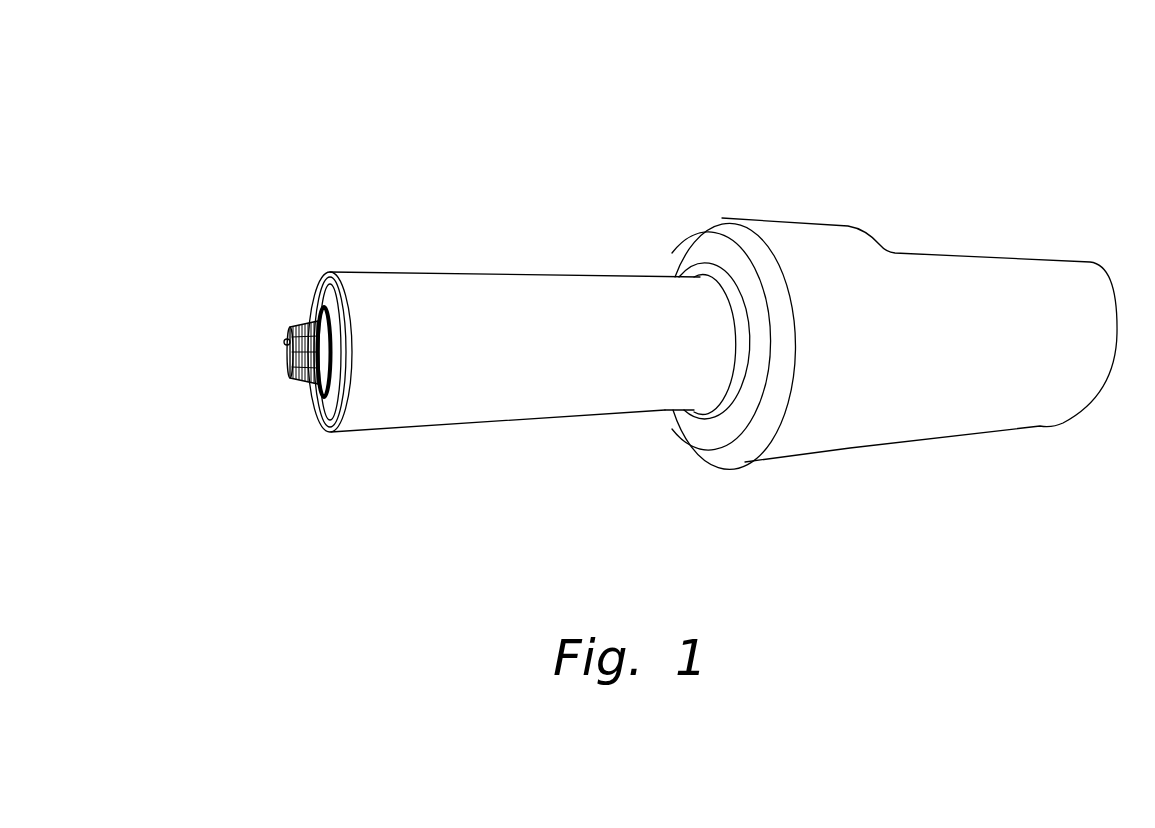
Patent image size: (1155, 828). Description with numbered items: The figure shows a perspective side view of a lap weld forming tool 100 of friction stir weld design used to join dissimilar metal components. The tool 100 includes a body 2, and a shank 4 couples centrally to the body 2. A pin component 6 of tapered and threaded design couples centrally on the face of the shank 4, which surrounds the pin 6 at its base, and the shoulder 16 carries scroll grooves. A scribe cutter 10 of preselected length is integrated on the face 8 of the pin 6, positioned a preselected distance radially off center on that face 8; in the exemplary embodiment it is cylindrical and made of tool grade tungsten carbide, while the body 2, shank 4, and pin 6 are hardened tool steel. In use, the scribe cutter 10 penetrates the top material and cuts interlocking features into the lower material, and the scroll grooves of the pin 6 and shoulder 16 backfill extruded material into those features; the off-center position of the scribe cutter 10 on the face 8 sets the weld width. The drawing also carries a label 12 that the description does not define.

The lap weld forming tool 100 is at (405, 80).
The body 2 is at (902, 425).
The shank 4 is at (480, 354).
The pin component 6 is at (284, 410).
The face of pin 8 is at (273, 318).
The scribe cutter 10 is at (285, 339).
The insulator 12 is at (303, 416).
The shoulder 16 is at (320, 288).